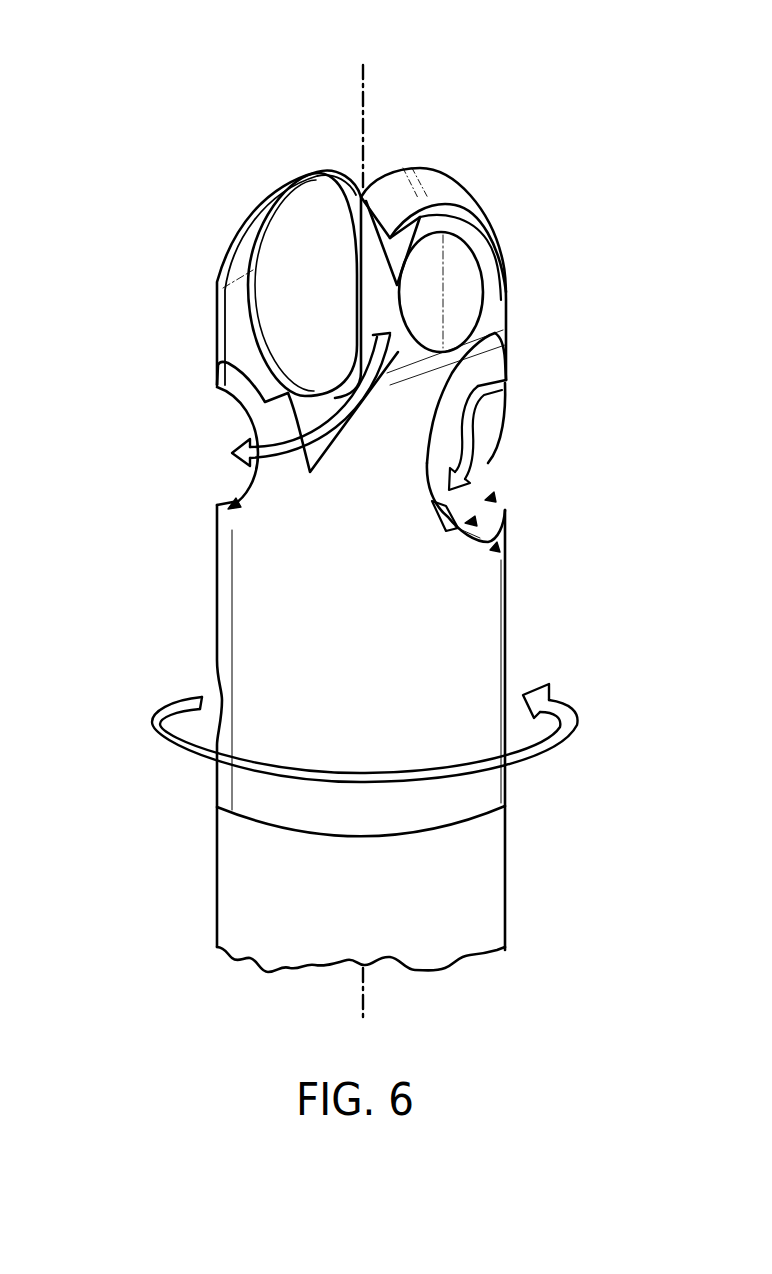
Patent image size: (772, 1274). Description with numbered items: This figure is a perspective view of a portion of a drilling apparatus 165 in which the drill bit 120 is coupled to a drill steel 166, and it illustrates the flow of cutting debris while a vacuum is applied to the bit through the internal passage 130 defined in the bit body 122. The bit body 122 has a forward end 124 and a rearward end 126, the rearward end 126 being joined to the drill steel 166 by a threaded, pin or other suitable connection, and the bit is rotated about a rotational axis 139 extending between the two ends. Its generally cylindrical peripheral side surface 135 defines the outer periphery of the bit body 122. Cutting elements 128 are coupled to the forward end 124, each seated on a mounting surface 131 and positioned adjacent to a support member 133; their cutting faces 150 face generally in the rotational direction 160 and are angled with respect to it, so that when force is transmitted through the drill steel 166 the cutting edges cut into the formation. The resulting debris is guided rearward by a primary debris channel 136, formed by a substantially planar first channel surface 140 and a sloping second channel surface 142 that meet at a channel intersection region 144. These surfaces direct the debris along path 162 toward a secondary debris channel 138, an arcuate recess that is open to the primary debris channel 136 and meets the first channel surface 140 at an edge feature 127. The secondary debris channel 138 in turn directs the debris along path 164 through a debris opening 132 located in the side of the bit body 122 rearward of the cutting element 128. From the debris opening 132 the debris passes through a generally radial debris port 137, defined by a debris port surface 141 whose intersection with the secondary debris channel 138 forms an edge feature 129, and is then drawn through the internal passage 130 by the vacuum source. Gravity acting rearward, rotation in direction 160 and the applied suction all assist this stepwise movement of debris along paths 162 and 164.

The drill bit 120 is at (533, 236).
The bit body 122 is at (215, 600).
The forward end 124 is at (389, 156).
The rearward end 126 is at (270, 840).
The edge feature 127 is at (268, 418).
The cutting element 128 is at (298, 182).
The edge feature 129 is at (493, 480).
The internal passage 130 is at (472, 521).
The mounting surface 131 is at (240, 280).
The debris opening 132 is at (215, 535).
The support member 133 is at (232, 400).
The peripheral side surface 135 is at (493, 593).
The primary debris channel 136 is at (432, 378).
The debris port 137 is at (492, 496).
The secondary debris channel 138 is at (250, 482).
The rotational axis 139 is at (360, 118).
The first channel surface 140 is at (282, 432).
The debris port surface 141 is at (486, 392).
The second channel surface 142 is at (452, 365).
The channel intersection region 144 is at (262, 540).
The cutting face 150 is at (285, 262).
The rotational direction 160 is at (522, 767).
The path 162 is at (245, 445).
The path 164 is at (507, 423).
The drilling apparatus 165 is at (161, 111).
The drill steel 166 is at (507, 882).